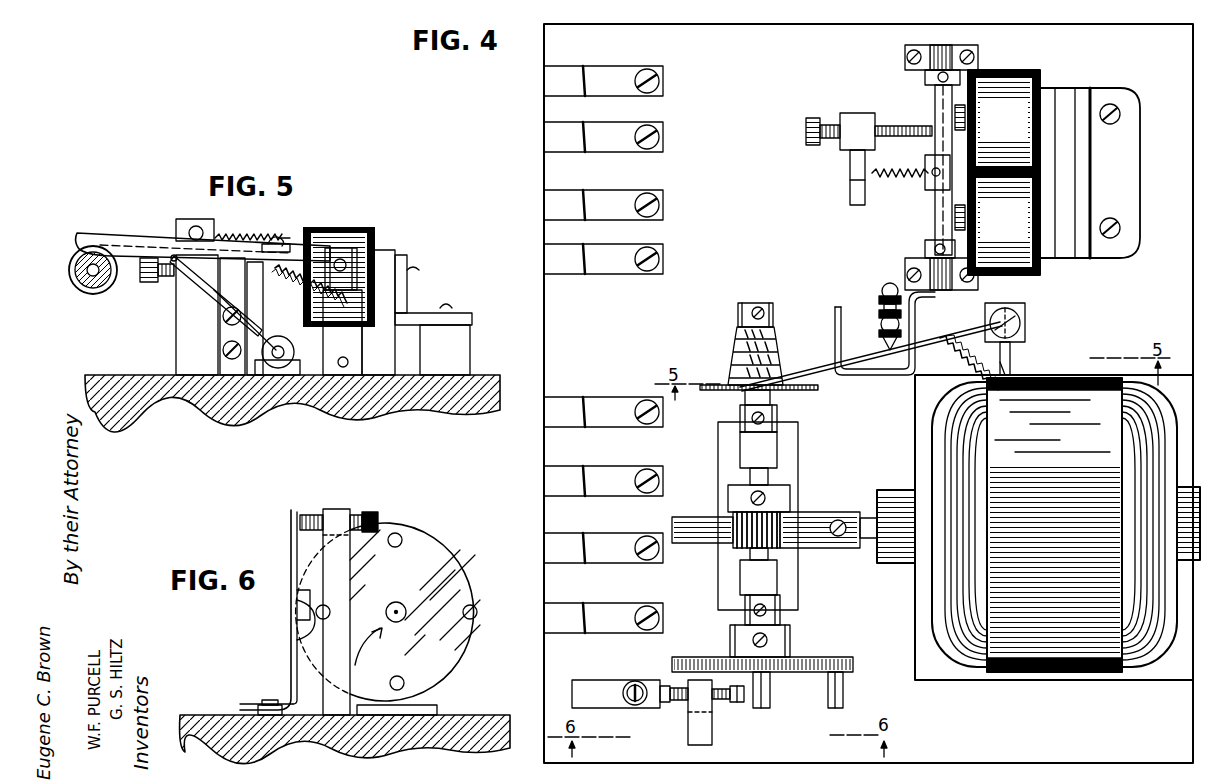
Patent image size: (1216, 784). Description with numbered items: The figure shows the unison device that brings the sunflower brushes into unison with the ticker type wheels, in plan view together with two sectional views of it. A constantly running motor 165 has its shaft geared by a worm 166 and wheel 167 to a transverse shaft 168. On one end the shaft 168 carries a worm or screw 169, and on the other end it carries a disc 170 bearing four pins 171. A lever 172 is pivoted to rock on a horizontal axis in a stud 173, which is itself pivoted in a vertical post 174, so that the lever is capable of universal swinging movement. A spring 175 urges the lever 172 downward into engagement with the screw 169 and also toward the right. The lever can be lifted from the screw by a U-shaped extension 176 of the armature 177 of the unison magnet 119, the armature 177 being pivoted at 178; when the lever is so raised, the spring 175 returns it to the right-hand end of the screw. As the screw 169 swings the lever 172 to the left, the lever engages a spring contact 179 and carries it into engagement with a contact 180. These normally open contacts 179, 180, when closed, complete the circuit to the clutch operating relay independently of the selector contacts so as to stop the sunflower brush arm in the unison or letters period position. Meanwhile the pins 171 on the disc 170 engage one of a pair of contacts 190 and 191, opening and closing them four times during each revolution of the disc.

In FIG. 4, the unison magnet 119 is at (1007, 82).
In FIG. 4, the motor 165 is at (1080, 385).
In FIG. 4, the worm 166 is at (775, 545).
In FIG. 4, the wheel 167 is at (700, 543).
In FIG. 4, the transverse shaft 168 is at (777, 474).
In FIG. 4, the screw 169 is at (737, 350).
In FIG. 5, the screw 169 is at (72, 280).
In FIG. 4, the disc 170 is at (818, 660).
In FIG. 6, the disc 170 is at (430, 546).
In FIG. 4, the pins 171 is at (843, 691).
In FIG. 6, the pins 171 is at (478, 610).
In FIG. 4, the lever 172 is at (815, 368).
In FIG. 5, the lever 172 is at (168, 247).
In FIG. 4, the stud 173 is at (1020, 331).
In FIG. 5, the stud 173 is at (346, 262).
In FIG. 4, the vertical post 174 is at (1024, 310).
In FIG. 5, the vertical post 174 is at (355, 338).
In FIG. 4, the spring 175 is at (958, 352).
In FIG. 5, the spring 175 is at (328, 340).
In FIG. 4, the U-shaped extension 176 is at (835, 316).
In FIG. 5, the U-shaped extension 176 is at (192, 285).
In FIG. 4, the armature 177 is at (935, 104).
In FIG. 5, the armature 177 is at (278, 244).
In FIG. 4, the pivot 178 is at (935, 251).
In FIG. 5, the pivot 178 is at (284, 353).
In FIG. 4, the spring contact 179 is at (881, 321).
In FIG. 5, the spring contact 179 is at (225, 290).
In FIG. 4, the contact 180 is at (881, 298).
In FIG. 4, the contact 190 is at (680, 706).
In FIG. 6, the contact 190 is at (310, 515).
In FIG. 4, the contact 191 is at (648, 708).
In FIG. 6, the contact 191 is at (291, 512).